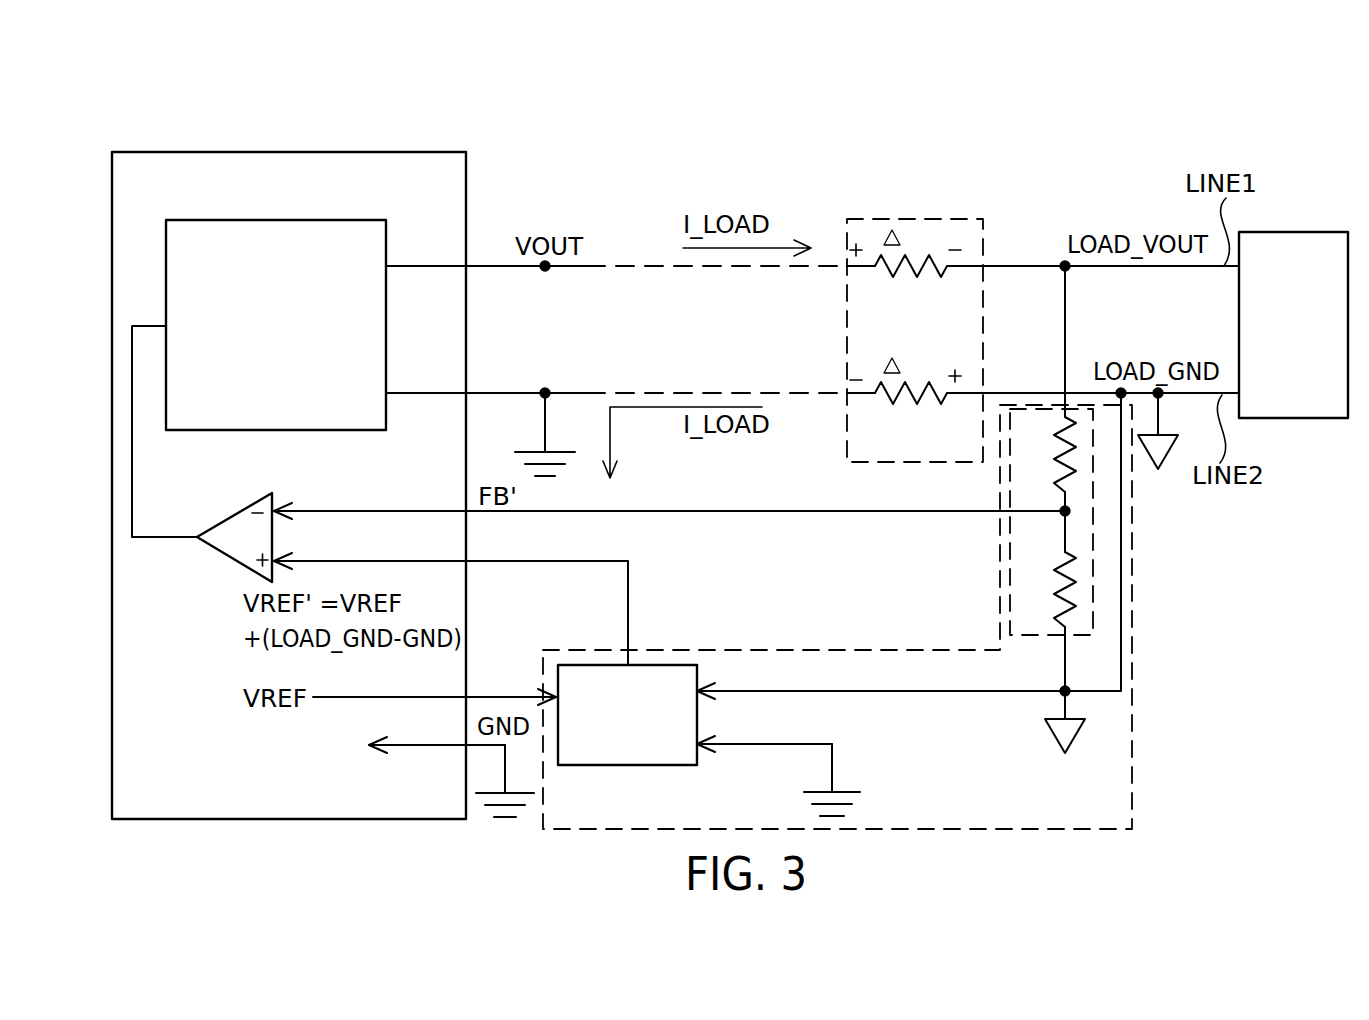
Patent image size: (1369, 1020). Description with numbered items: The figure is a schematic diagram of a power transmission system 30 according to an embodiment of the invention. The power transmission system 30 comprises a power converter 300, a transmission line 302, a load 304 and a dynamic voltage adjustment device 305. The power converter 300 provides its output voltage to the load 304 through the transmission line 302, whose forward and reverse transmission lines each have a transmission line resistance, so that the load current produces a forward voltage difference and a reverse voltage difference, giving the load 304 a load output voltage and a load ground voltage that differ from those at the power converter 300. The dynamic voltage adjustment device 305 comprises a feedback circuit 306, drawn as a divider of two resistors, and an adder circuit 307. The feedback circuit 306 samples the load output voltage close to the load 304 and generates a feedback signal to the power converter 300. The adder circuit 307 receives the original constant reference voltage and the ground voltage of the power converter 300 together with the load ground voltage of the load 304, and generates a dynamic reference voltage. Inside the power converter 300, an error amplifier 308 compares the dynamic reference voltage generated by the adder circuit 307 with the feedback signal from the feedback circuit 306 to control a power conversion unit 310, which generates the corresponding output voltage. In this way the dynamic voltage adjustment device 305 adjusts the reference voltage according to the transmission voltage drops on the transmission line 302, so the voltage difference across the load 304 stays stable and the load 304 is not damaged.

The power transmission system 30 is at (1140, 124).
The power converter 300 is at (438, 152).
The power conversion unit 310 is at (192, 220).
The error amplifier 308 is at (226, 516).
The transmission line 302 is at (915, 219).
The load 304 is at (1296, 232).
The dynamic voltage adjustment device 305 is at (865, 547).
The feedback circuit 306 is at (1022, 637).
The adder circuit 307 is at (665, 665).